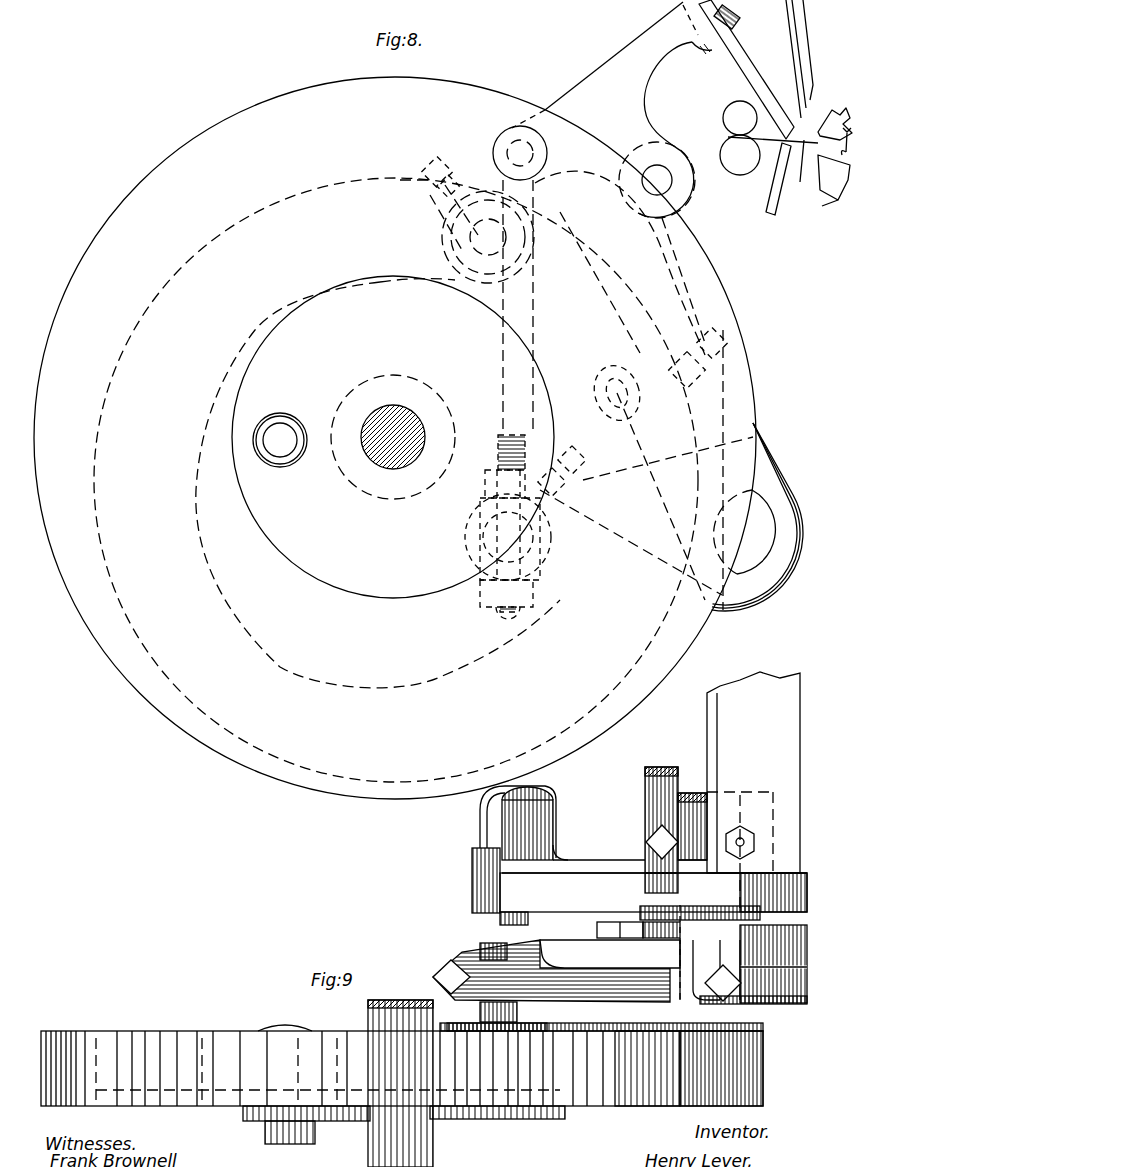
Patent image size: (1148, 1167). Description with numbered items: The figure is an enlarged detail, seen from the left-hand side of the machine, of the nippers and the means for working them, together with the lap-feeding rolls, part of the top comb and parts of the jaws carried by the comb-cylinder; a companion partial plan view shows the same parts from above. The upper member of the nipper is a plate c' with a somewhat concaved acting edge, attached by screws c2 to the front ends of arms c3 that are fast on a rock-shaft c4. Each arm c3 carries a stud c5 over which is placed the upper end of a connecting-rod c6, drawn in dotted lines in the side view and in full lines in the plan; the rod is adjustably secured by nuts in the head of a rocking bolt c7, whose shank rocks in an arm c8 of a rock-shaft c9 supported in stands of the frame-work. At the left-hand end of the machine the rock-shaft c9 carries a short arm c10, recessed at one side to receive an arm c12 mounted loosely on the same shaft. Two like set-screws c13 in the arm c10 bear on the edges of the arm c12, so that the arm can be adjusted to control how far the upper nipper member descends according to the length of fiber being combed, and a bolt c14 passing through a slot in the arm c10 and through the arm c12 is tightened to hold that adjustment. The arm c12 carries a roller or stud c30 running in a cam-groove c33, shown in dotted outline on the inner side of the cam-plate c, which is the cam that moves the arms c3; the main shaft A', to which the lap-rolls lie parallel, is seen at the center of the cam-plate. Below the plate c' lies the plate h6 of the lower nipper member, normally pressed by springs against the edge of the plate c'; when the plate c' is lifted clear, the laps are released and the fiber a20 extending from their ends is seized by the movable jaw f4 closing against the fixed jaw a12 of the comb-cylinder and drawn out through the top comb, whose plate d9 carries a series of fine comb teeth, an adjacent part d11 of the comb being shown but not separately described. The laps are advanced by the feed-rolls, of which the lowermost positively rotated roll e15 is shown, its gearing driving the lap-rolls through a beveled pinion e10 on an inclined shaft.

In FIG. 8, the cam-plate c is at (395, 438).
In FIG. 9, the cam-plate c is at (402, 1064).
In FIG. 8, the plate c' is at (746, 69).
In FIG. 9, the plate c' is at (766, 772).
In FIG. 8, the screws c2 is at (733, 20).
In FIG. 9, the screws c2 is at (758, 842).
In FIG. 8, the arms c3 is at (605, 65).
In FIG. 9, the arms c3 is at (595, 870).
In FIG. 8, the rock-shaft c4 is at (668, 182).
In FIG. 9, the rock-shaft c4 is at (645, 777).
In FIG. 8, the stud c5 is at (508, 148).
In FIG. 9, the stud c5 is at (548, 794).
In FIG. 8, the connecting-rod c6 is at (505, 376).
In FIG. 9, the connecting-rod c6 is at (560, 828).
In FIG. 8, the rocking bolt c7 is at (508, 537).
In FIG. 9, the rocking bolt c7 is at (480, 836).
In FIG. 8, the arm c8 is at (562, 583).
In FIG. 9, the arm c8 is at (472, 892).
In FIG. 8, the rock-shaft c9 is at (762, 530).
In FIG. 9, the rock-shaft c9 is at (770, 1005).
In FIG. 8, the short arm c10 is at (757, 447).
In FIG. 9, the short arm c10 is at (557, 948).
In FIG. 8, the arm c12 is at (634, 310).
In FIG. 9, the arm c12 is at (565, 1004).
In FIG. 8, the set-screws c13 is at (735, 353).
In FIG. 9, the set-screws c13 is at (723, 976).
In FIG. 8, the bolt c14 is at (628, 400).
In FIG. 9, the bolt c14 is at (603, 936).
In FIG. 8, the roller or stud c30 is at (440, 246).
In FIG. 8, the cam-groove c33 is at (354, 482).
In FIG. 8, the main shaft A' is at (393, 453).
In FIG. 9, the main shaft A' is at (338, 1080).
In FIG. 8, the plate d9 is at (790, 38).
In FIG. 8, the guide d11 is at (800, 38).
In FIG. 8, the lowermost feed-roll e15 is at (726, 116).
In FIG. 8, the beveled pinion e10 is at (742, 172).
In FIG. 8, the movable jaw f4 is at (835, 119).
In FIG. 8, the plate h6 is at (768, 204).
In FIG. 8, the fiber a20 is at (825, 170).
In FIG. 8, the fixed jaw a12 is at (834, 198).